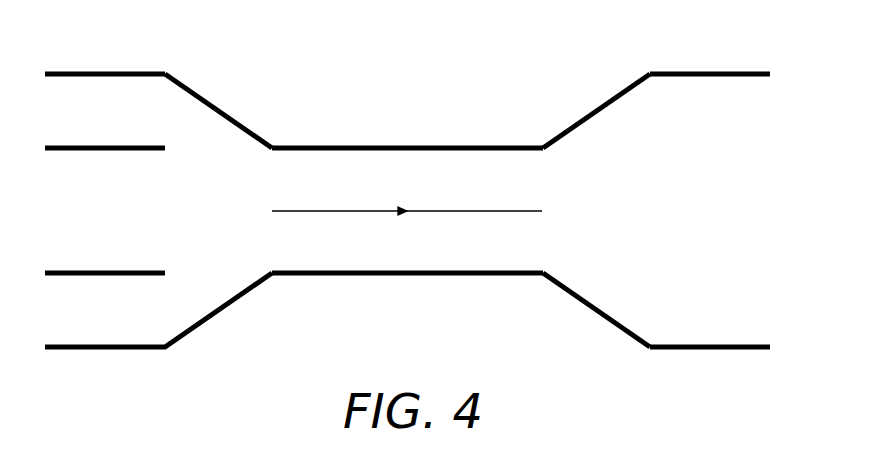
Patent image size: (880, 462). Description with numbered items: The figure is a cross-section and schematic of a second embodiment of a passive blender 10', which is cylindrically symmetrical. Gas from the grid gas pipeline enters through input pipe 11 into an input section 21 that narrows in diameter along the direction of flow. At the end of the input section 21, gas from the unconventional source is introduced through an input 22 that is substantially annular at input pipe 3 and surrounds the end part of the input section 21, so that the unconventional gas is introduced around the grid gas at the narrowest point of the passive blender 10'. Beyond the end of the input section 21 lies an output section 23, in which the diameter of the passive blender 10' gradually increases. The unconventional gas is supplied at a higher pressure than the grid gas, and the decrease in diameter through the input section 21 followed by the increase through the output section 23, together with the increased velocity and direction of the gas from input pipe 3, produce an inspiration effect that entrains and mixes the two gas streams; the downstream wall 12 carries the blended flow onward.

The input 22 is at (85, 95).
The input section 21 is at (221, 111).
The output section 23 is at (594, 112).
The input pipe 11 is at (93, 150).
The input pipe 3 is at (49, 209).
The passive blender 10' is at (407, 308).
The outlet wall portion 12 is at (713, 349).